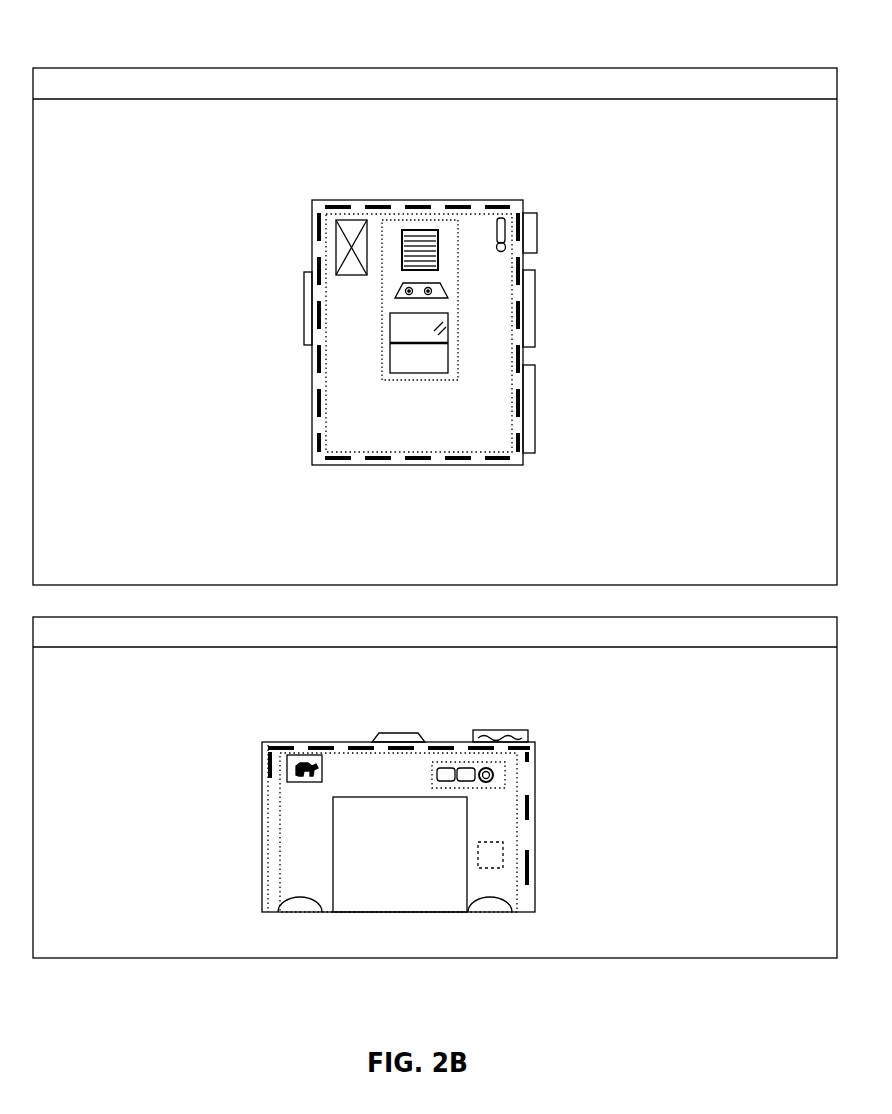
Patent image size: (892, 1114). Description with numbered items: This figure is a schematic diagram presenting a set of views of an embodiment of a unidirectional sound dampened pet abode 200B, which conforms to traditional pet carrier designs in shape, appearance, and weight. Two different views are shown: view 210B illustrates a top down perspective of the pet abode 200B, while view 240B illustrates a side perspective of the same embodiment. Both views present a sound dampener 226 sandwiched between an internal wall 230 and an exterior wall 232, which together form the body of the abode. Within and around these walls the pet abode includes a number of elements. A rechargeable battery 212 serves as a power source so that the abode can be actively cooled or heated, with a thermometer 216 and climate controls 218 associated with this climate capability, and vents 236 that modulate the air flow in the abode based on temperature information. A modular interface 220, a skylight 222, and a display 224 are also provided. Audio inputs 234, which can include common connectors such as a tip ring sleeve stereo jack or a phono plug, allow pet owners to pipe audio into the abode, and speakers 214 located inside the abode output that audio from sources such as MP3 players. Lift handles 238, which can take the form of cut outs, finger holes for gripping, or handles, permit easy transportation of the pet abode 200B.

The unidirectional sound dampened pet abode 200B is at (820, 36).
The top down view 210B is at (435, 326).
The side view 240B is at (435, 787).
The rechargeable battery 212 is at (348, 216).
The speakers 214 is at (503, 855).
The thermometer 216 is at (504, 217).
The climate controls 218 is at (540, 250).
The modular interface 220 is at (535, 310).
The skylight 222 is at (398, 380).
The display 224 is at (535, 430).
The sound dampener 226 is at (524, 462).
The internal wall 230 is at (357, 451).
The exterior wall 232 is at (498, 463).
The audio inputs 234 is at (390, 287).
The vents 236 is at (438, 256).
The lift handles 238 is at (302, 912).